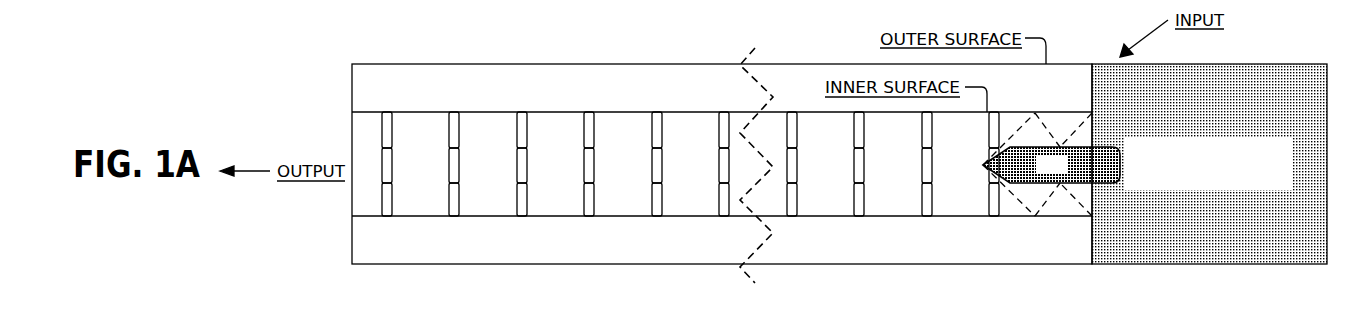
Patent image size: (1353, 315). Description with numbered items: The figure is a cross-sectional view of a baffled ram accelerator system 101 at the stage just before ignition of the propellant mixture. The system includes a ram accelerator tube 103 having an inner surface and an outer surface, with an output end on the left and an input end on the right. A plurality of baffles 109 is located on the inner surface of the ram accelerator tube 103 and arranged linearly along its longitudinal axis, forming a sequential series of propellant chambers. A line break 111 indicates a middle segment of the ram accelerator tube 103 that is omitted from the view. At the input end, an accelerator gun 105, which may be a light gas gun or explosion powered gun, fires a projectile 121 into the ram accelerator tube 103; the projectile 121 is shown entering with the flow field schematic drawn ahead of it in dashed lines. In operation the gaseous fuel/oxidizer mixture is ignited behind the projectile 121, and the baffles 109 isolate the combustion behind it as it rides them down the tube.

The baffled ram accelerator system 101 is at (389, 43).
The ram accelerator tube 103 is at (378, 80).
The accelerator gun 105 is at (1209, 164).
The baffles 109 is at (657, 140).
The line break 111 is at (756, 154).
The projectile 121 is at (1065, 174).